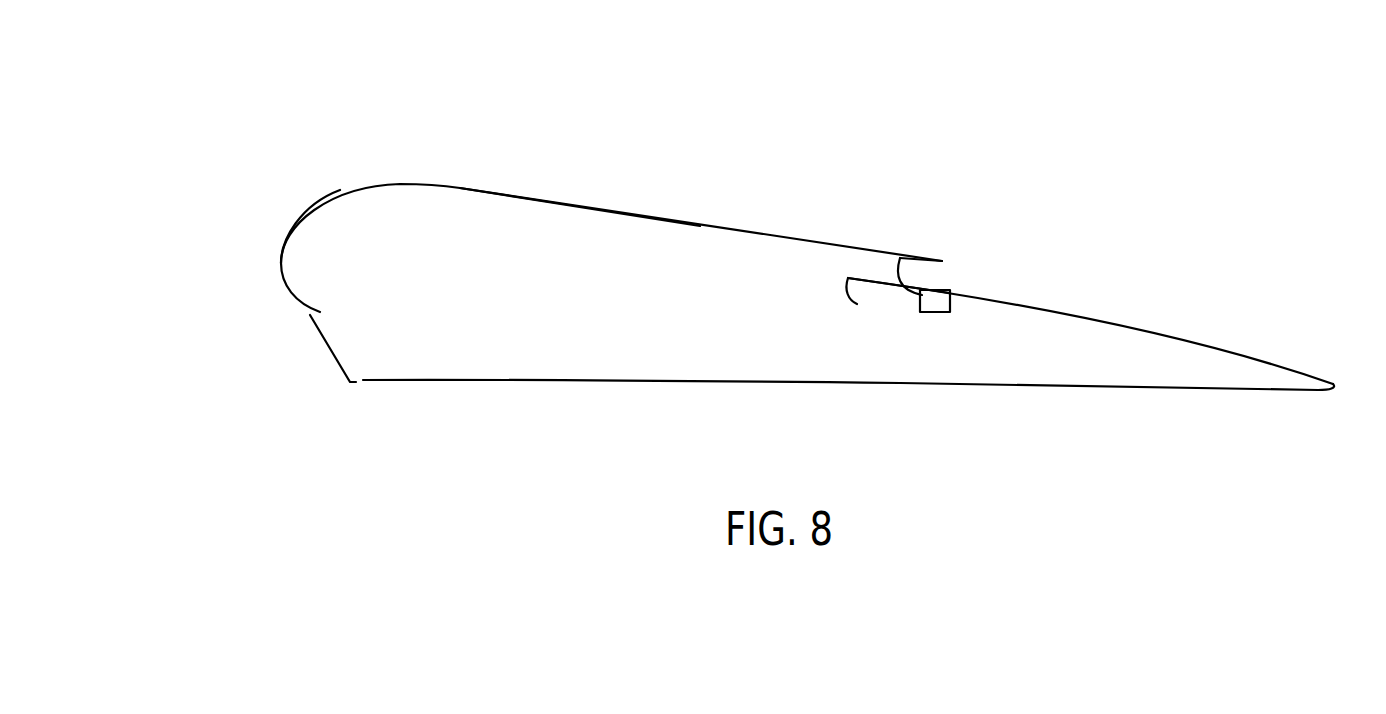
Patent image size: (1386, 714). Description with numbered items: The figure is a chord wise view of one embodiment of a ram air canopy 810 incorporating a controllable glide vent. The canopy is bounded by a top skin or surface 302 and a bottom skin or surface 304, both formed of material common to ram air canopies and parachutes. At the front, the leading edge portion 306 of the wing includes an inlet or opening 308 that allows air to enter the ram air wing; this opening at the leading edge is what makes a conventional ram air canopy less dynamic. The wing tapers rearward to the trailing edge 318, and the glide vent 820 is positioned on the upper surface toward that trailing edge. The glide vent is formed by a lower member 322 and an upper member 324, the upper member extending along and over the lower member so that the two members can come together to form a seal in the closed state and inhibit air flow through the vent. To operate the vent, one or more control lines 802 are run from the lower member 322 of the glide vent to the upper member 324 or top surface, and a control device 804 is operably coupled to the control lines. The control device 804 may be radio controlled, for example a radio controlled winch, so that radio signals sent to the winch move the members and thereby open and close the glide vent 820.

The top skin or surface 302 is at (375, 185).
The bottom skin or surface 304 is at (623, 383).
The leading edge portion 306 is at (237, 268).
The inlet or opening 308 is at (328, 350).
The trailing edge 318 is at (1255, 270).
The lower member 322 is at (885, 283).
The upper member 324 is at (885, 252).
The control line 802 is at (902, 282).
The control device 804 is at (937, 313).
The ram air canopy 810 is at (805, 88).
The glide vent 820 is at (948, 207).